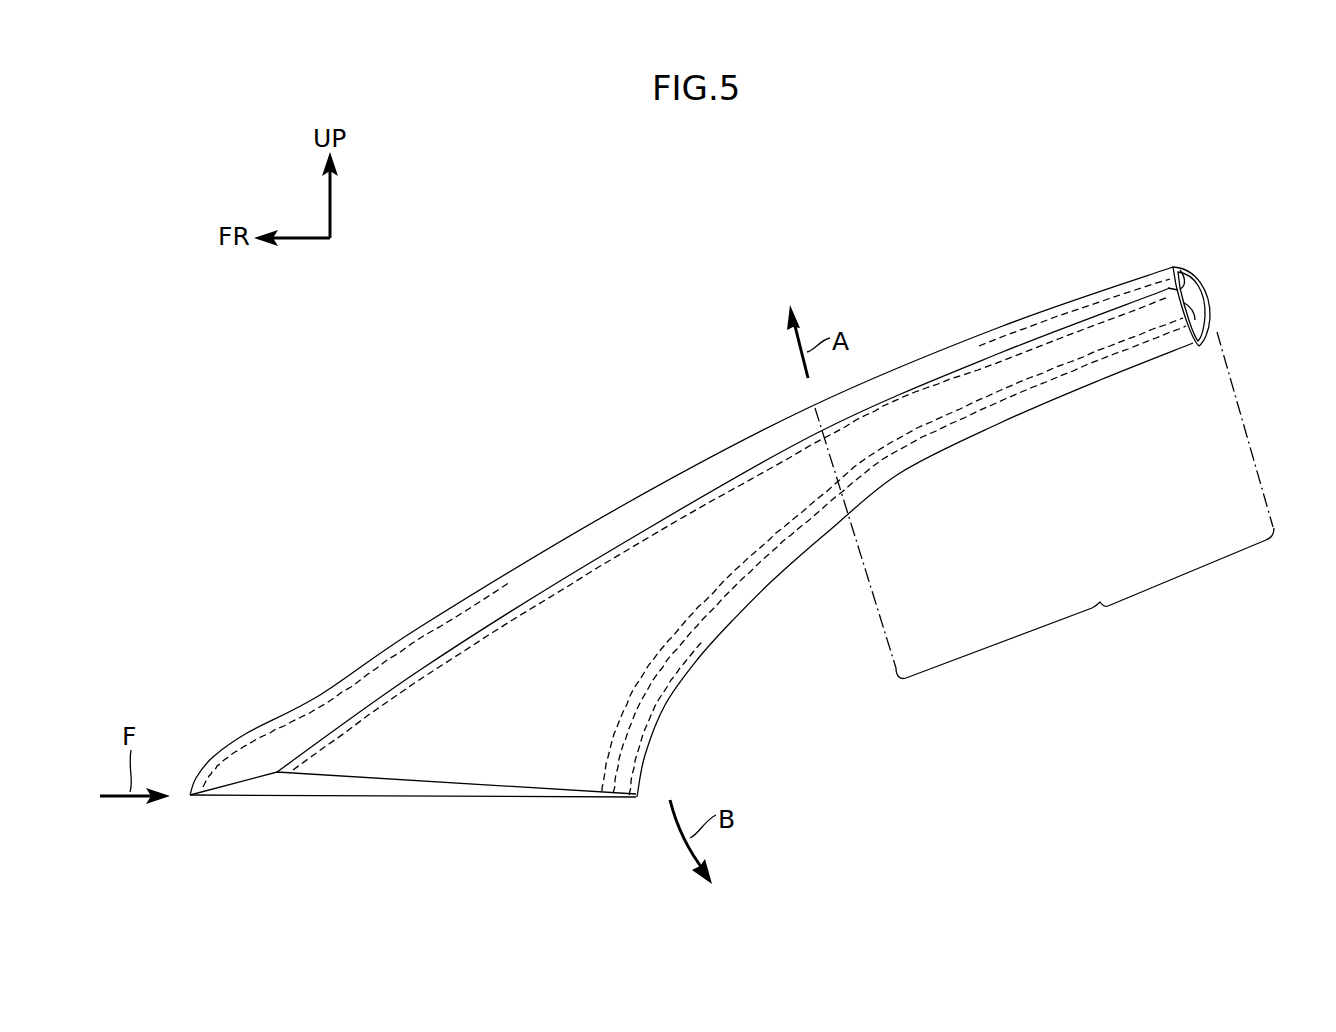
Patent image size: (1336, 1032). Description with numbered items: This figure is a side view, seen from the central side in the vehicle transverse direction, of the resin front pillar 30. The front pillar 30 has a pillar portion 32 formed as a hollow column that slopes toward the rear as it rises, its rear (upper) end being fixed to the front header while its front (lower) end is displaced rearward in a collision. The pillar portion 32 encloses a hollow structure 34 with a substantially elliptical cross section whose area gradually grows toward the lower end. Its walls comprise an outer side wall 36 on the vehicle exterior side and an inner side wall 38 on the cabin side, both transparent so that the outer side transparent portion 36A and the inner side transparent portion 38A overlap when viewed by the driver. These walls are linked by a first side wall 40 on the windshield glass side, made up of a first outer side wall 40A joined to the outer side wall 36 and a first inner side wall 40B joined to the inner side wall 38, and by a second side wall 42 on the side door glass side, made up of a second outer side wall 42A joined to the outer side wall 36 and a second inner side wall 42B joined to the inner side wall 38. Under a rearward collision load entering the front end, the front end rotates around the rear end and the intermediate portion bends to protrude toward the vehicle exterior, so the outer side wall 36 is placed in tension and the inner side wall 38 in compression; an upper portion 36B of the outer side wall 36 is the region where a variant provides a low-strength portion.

The front pillar 30 is at (830, 243).
The pillar portion 32 is at (726, 452).
The hollow structure 34 is at (1200, 348).
The outer side wall 36 is at (1200, 280).
The outer side transparent portion 36A is at (910, 378).
The upper portion of the outer side wall 36B is at (1044, 505).
The inner side wall 38 is at (1067, 353).
The inner side transparent portion 38A is at (917, 423).
The first side wall 40 is at (1145, 150).
The first outer side wall 40A is at (1152, 285).
The first inner side wall 40B is at (1175, 300).
The second side wall 42 is at (1300, 164).
The second outer side wall 42A is at (1217, 330).
The second inner side wall 42B is at (1215, 317).